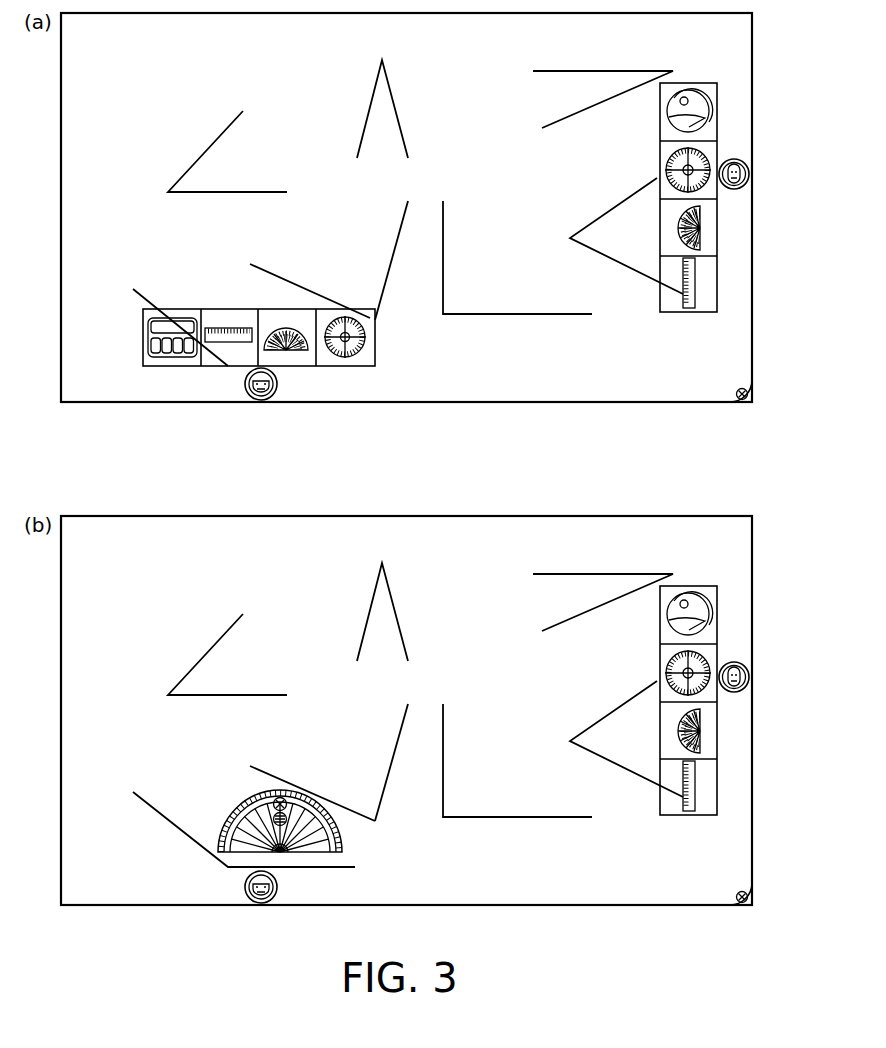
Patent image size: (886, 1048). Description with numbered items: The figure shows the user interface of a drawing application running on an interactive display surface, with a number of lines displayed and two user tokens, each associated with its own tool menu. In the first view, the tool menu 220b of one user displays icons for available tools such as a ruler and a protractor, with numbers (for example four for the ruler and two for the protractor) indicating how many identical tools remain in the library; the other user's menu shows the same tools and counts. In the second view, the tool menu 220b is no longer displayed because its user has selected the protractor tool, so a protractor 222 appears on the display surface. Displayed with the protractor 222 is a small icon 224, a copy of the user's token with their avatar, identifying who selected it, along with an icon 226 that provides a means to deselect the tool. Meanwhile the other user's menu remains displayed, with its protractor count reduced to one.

The display tool menu 220b is at (228, 308).
The protractor 222 is at (316, 821).
The icon representing the user 224 is at (237, 805).
The icon 226 is at (300, 775).